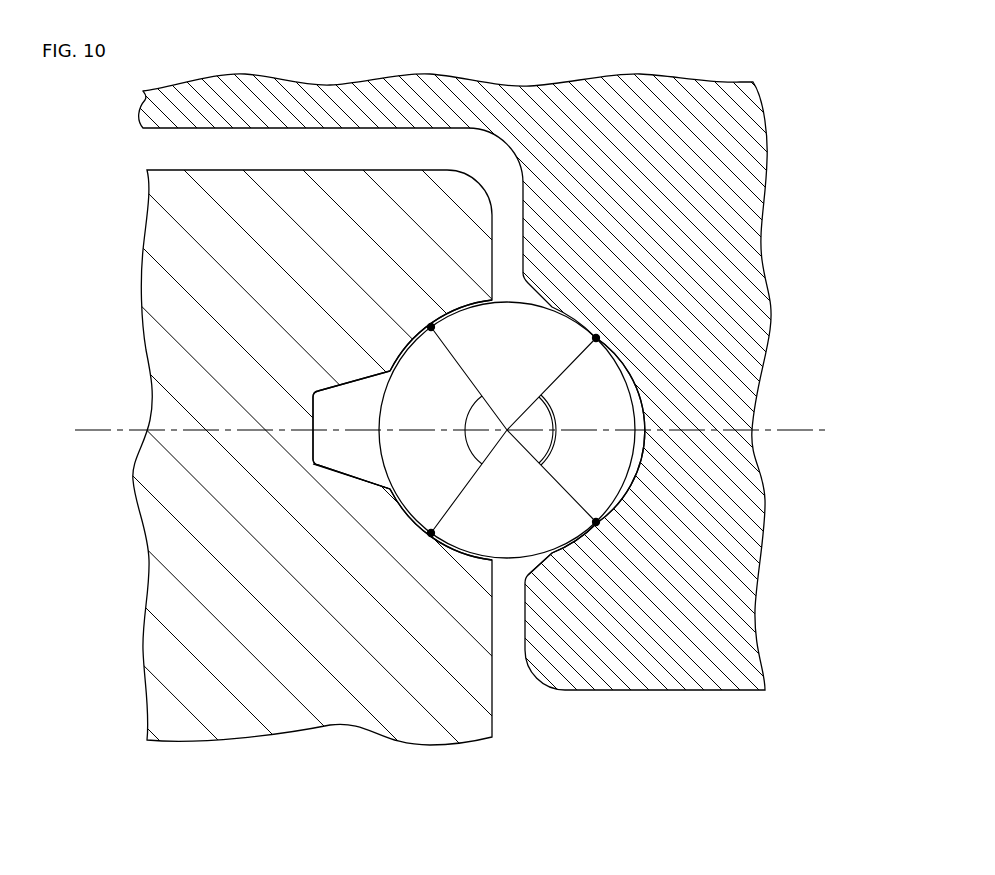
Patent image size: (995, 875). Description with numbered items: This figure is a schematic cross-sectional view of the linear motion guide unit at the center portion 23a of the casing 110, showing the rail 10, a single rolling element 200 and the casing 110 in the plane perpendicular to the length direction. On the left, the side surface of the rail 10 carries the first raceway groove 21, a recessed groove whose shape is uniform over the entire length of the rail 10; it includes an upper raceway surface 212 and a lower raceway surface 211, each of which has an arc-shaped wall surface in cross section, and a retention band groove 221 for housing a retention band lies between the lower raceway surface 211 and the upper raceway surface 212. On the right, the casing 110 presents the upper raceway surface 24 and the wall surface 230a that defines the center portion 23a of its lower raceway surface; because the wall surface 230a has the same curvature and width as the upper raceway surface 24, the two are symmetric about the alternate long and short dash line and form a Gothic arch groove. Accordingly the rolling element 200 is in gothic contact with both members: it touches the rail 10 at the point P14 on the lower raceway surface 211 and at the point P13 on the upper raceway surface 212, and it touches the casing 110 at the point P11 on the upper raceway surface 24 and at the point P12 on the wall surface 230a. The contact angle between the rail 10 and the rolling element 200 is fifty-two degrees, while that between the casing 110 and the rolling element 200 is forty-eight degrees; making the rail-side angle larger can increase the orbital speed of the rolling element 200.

The rail 10 is at (288, 245).
The casing 110 is at (626, 178).
The rolling element 200 is at (527, 361).
The first raceway groove 21 is at (413, 484).
The retention band groove 221 is at (335, 462).
The upper raceway surface 212 is at (447, 308).
The lower raceway surface 211 is at (460, 548).
The upper raceway surface 24 is at (640, 393).
The center portion 23a is at (701, 564).
The wall surface 230a is at (590, 533).
The point P11 is at (596, 338).
The point P12 is at (596, 522).
The point P13 is at (431, 327).
The point P14 is at (431, 533).